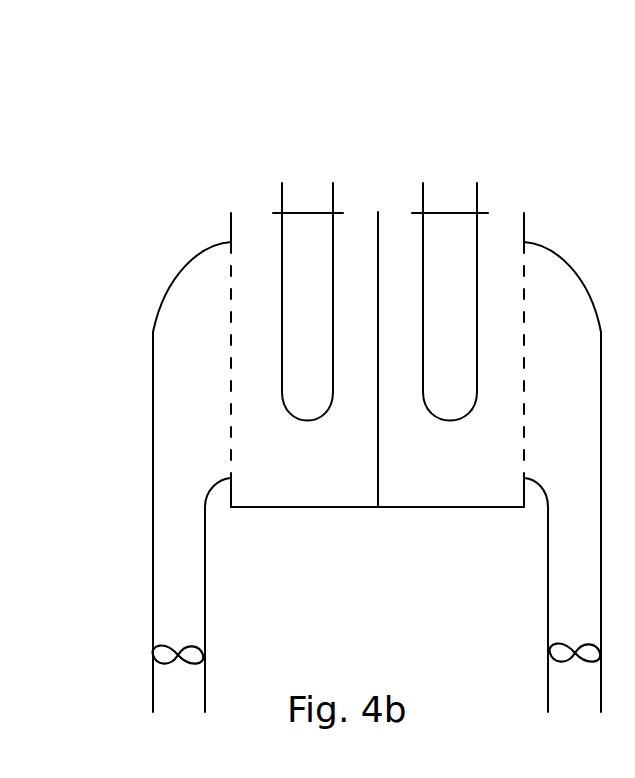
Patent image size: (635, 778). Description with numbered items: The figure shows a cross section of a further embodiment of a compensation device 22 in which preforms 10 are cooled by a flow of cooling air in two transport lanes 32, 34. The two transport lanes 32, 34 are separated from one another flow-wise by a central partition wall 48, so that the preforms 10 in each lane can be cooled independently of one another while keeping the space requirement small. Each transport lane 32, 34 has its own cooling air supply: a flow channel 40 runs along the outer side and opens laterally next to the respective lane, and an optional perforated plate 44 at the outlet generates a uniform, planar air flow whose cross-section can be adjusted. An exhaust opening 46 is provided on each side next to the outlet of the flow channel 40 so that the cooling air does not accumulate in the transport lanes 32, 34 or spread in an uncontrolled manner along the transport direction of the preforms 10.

The compensation device 22 is at (114, 188).
The flow channel 40 is at (197, 315).
The perforated plate 44 is at (232, 303).
The preform 10 is at (312, 267).
The partition wall 48 is at (375, 477).
The transport lane 32 is at (303, 480).
The transport lane 34 is at (453, 478).
The exhaust opening 46 is at (203, 648).